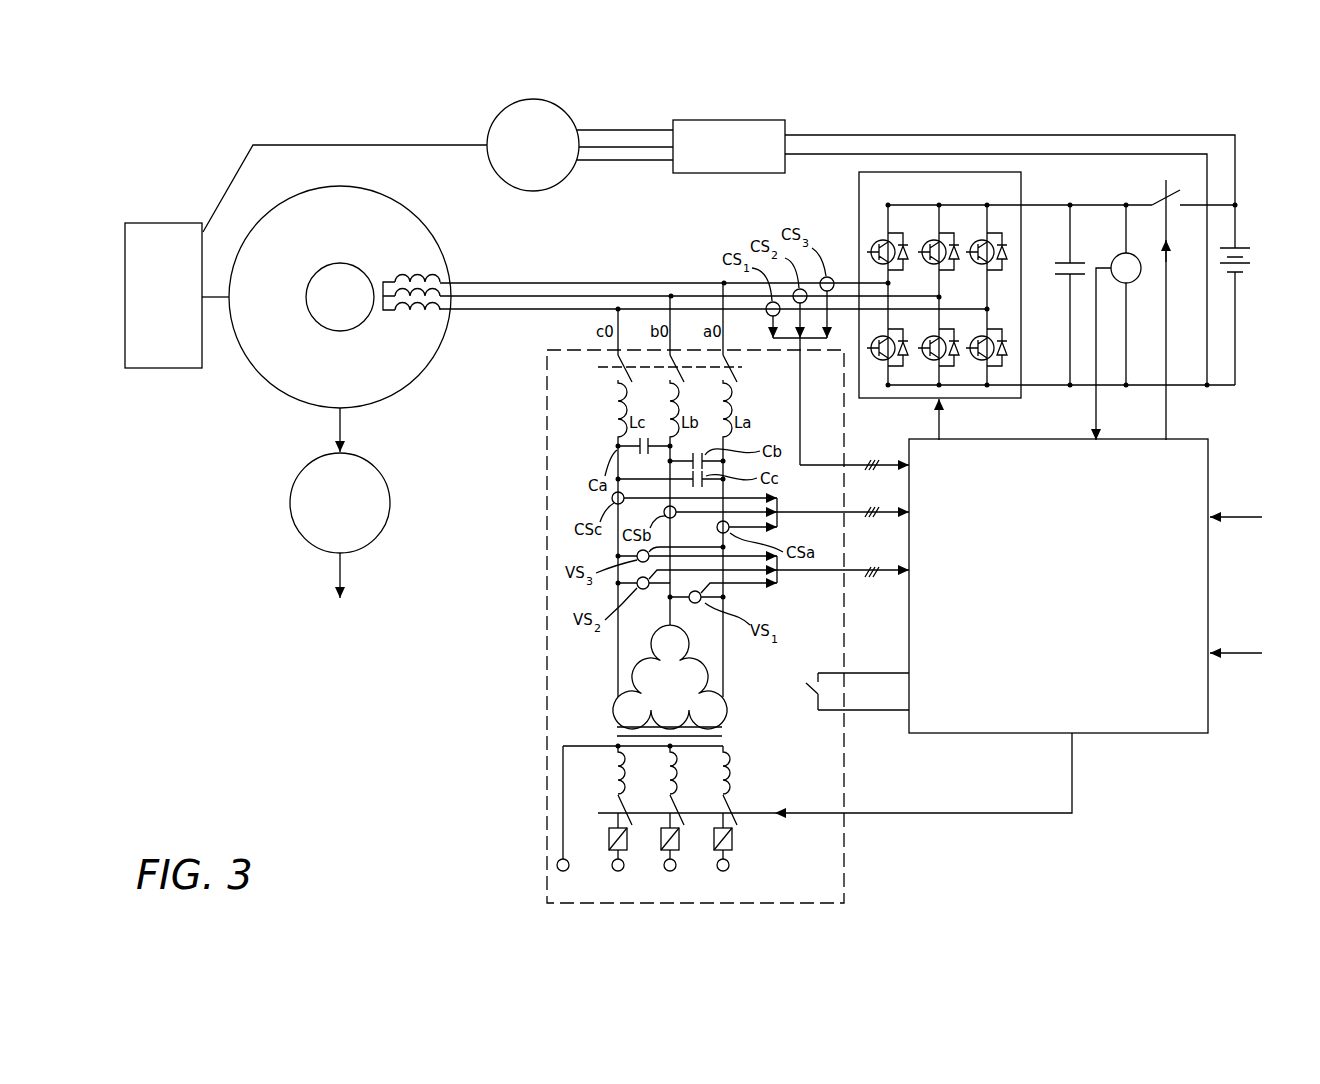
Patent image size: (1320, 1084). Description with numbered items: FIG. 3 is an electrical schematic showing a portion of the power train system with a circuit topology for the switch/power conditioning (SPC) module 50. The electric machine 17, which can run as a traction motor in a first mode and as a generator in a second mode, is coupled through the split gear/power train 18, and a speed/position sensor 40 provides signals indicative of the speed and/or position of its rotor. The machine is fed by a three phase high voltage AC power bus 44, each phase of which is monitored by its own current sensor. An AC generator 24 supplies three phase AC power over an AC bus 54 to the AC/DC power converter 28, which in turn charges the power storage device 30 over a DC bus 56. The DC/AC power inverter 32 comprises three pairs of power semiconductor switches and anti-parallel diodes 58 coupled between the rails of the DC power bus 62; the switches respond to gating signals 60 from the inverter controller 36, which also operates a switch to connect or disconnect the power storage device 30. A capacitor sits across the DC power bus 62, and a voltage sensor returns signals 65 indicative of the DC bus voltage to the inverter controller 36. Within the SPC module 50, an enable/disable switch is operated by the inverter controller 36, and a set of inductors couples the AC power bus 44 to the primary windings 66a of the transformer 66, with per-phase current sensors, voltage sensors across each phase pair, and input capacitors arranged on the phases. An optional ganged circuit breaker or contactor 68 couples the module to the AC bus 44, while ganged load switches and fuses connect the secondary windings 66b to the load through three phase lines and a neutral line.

The electric machine 17 is at (413, 205).
The split gear/power train 18 is at (155, 368).
The AC generator 24 is at (533, 191).
The AC/DC power converter 28 is at (729, 173).
The power storage device 30 is at (1247, 250).
The DC/AC power inverter 32 is at (858, 198).
The inverter controller 36 is at (1157, 733).
The speed/position sensor 40 is at (290, 503).
The high voltage AC power bus 44 is at (587, 243).
The SPC module 50 is at (547, 525).
The AC bus 54 is at (613, 122).
The DC bus 56 is at (937, 123).
The power semiconductor switches and anti-parallel diodes 58 is at (1032, 223).
The gating signals 60 is at (942, 431).
The DC power bus 62 is at (1190, 203).
The voltage signals 65 is at (1095, 412).
The transformer 66 is at (678, 761).
The primary windings 66a is at (670, 677).
The secondary windings 66b is at (759, 758).
The ganged circuit breaker or contactor 68 is at (585, 381).